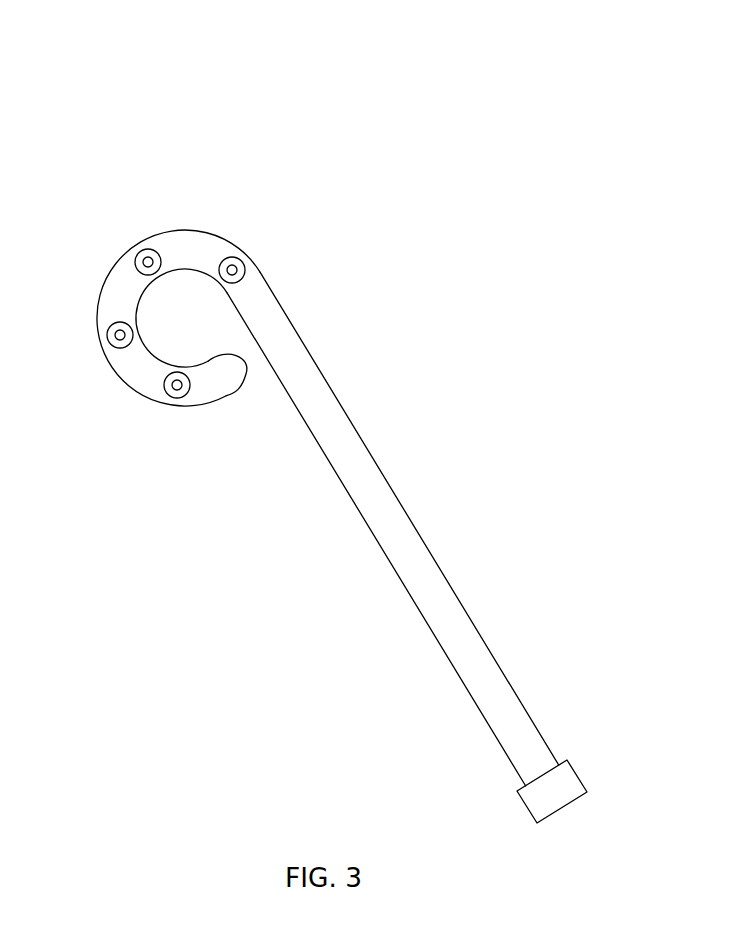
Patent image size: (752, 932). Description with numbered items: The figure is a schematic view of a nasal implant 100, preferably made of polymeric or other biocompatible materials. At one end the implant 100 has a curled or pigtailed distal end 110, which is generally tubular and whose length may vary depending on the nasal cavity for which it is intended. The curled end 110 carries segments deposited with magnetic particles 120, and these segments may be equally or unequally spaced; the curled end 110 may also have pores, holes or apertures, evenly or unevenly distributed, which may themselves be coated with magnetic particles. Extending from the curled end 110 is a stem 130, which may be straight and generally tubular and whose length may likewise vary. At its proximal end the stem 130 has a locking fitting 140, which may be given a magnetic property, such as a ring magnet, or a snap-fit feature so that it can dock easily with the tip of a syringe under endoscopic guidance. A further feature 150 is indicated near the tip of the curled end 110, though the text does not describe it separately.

The nasal implant 100 is at (323, 112).
The curled distal end 110 is at (118, 376).
The magnetic particles 120 is at (162, 262).
The stem 130 is at (365, 488).
The locking fitting 140 is at (558, 782).
The rounded hook tip 150 is at (243, 366).